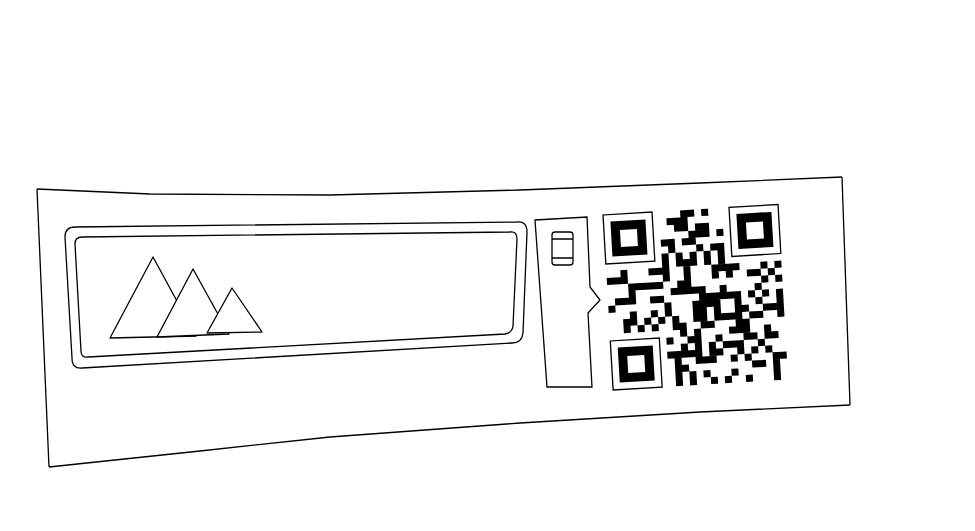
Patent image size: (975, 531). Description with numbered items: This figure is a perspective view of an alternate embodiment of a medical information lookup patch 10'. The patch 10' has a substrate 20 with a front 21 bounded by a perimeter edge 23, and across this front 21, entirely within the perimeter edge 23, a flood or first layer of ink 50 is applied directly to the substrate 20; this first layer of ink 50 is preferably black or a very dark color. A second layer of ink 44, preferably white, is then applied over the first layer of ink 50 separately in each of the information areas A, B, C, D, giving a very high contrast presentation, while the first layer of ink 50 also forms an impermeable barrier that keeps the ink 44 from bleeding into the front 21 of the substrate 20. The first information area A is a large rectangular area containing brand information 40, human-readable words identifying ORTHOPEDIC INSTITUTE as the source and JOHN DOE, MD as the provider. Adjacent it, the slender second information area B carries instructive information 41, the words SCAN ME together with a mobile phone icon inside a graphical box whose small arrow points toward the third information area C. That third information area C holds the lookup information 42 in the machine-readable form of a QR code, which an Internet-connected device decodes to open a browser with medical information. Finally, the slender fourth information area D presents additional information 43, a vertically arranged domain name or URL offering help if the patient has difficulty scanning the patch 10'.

The patch 10' is at (449, 266).
The substrate 20 is at (853, 200).
The front 21 is at (824, 185).
The perimeter edge 23 is at (838, 407).
The brand information 40 is at (75, 369).
The instructive information 41 is at (542, 384).
The lookup information 42 is at (636, 364).
The additional information 43 is at (797, 374).
The ink 44 is at (72, 236).
The first layer of ink 50 is at (103, 437).
The first information area A is at (282, 198).
The second information area B is at (558, 198).
The third information area C is at (689, 191).
The fourth information area D is at (800, 189).